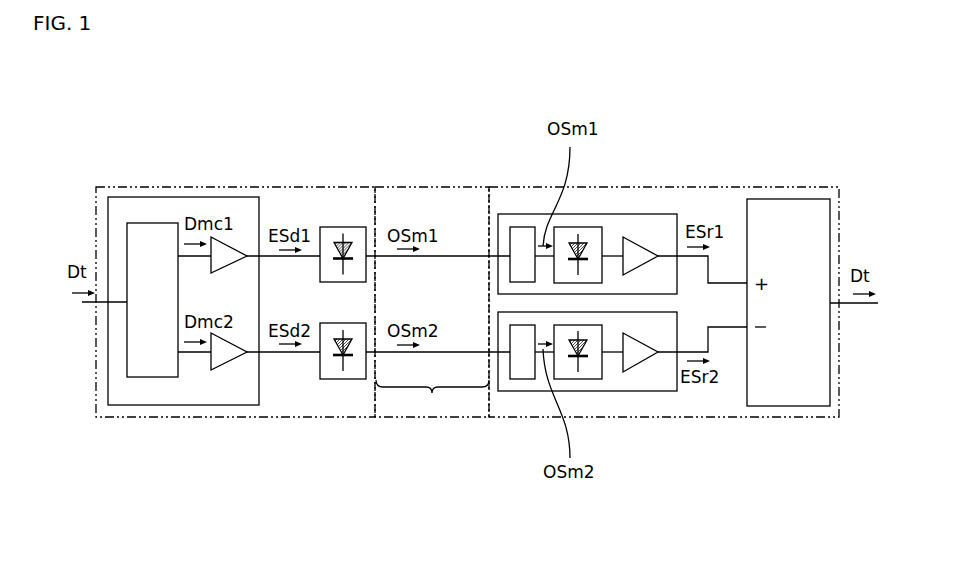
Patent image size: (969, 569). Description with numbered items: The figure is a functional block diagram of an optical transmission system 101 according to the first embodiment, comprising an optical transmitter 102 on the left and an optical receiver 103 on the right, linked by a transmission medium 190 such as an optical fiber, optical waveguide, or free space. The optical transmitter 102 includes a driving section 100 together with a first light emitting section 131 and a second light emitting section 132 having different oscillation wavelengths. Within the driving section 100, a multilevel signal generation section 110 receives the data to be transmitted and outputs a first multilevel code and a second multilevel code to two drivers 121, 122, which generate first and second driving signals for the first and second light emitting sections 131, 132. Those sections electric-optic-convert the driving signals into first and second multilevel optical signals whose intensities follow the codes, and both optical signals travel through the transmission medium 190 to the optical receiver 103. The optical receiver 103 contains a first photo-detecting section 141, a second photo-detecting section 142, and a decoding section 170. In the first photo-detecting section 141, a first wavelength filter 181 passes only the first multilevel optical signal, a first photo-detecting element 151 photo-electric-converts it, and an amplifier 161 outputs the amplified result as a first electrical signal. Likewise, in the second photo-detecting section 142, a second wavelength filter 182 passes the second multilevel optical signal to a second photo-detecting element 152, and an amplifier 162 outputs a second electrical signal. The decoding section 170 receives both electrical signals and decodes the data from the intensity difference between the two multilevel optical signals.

The optical transmission system 101 is at (102, 127).
The driving section 100 is at (130, 187).
The optical transmitter 102 is at (376, 187).
The optical receiver 103 is at (489, 187).
The multilevel signal generation section 110 is at (147, 377).
The driver 121 is at (233, 242).
The driver 122 is at (233, 362).
The first light emitting section 131 is at (335, 227).
The second light emitting section 132 is at (335, 379).
The transmission medium 190 is at (432, 402).
The first photo-detecting section 141 is at (642, 214).
The second photo-detecting section 142 is at (637, 391).
The first wavelength filter 181 is at (520, 227).
The second wavelength filter 182 is at (523, 379).
The first photo-detecting element 151 is at (580, 227).
The second photo-detecting element 152 is at (575, 379).
The amplifier 161 is at (655, 246).
The amplifier 162 is at (642, 365).
The decoding section 170 is at (785, 199).